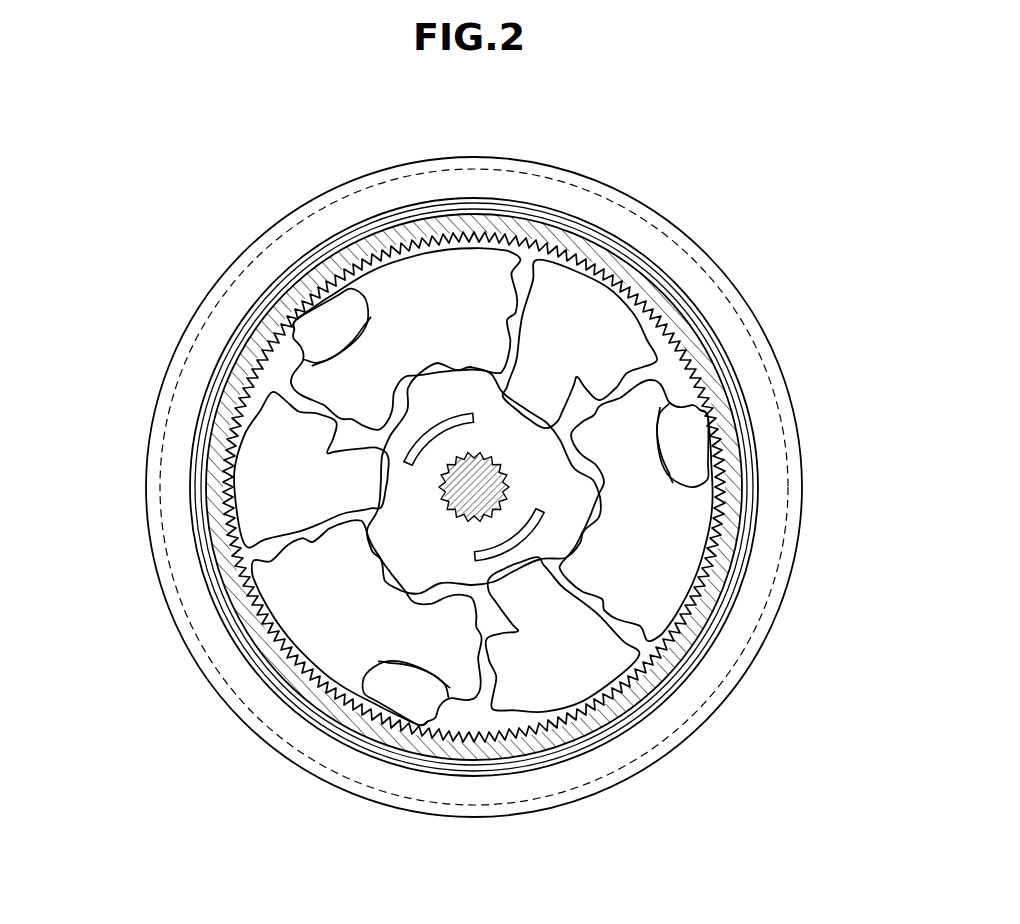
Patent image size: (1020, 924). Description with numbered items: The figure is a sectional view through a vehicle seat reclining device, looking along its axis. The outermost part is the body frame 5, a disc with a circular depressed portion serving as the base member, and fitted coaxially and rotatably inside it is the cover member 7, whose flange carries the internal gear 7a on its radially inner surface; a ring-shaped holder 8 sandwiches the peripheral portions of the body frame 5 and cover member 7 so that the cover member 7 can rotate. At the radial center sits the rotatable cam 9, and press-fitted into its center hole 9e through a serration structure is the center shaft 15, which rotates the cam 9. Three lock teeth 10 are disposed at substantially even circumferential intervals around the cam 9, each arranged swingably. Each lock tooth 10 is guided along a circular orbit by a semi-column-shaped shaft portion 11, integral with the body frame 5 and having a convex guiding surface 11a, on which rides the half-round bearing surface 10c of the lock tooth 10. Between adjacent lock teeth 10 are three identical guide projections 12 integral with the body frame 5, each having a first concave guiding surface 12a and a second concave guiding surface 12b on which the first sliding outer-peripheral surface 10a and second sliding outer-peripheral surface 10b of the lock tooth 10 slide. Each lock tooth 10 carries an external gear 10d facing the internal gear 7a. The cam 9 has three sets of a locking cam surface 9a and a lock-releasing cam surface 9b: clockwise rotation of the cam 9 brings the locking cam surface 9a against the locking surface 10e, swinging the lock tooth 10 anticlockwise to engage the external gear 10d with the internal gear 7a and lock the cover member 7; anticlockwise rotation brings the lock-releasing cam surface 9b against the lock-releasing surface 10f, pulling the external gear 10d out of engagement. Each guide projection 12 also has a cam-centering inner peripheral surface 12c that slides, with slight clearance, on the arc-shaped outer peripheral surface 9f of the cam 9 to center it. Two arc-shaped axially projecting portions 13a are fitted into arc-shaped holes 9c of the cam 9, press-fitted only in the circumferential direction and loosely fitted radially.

The body frame 5 is at (732, 356).
The cover member 7 is at (684, 328).
The internal gear 7a is at (475, 358).
The holder 8 is at (785, 382).
The cam 9 is at (552, 478).
The locking cam surface 9a is at (350, 293).
The lock-releasing cam surface 9b is at (403, 390).
The arc-shaped hole 9c is at (520, 424).
The center hole 9e is at (437, 433).
The arc-shaped outer peripheral surface 9f is at (507, 585).
The lock tooth 10 is at (447, 308).
The first sliding outer-peripheral surface 10a is at (528, 327).
The second sliding outer-peripheral surface 10b is at (360, 462).
The bearing surface 10c is at (373, 287).
The external gear 10d is at (432, 235).
The locking surface 10e is at (383, 541).
The lock-releasing surface 10f is at (458, 562).
The shaft portion 11 is at (342, 341).
The convex guiding surface 11a is at (440, 245).
The guide projection 12 is at (583, 341).
The first concave guiding surface 12a is at (506, 312).
The second concave guiding surface 12b is at (641, 357).
The cam-centering inner peripheral surface 12c is at (556, 448).
The axially projecting portion 13a is at (468, 424).
The center shaft 15 is at (483, 473).